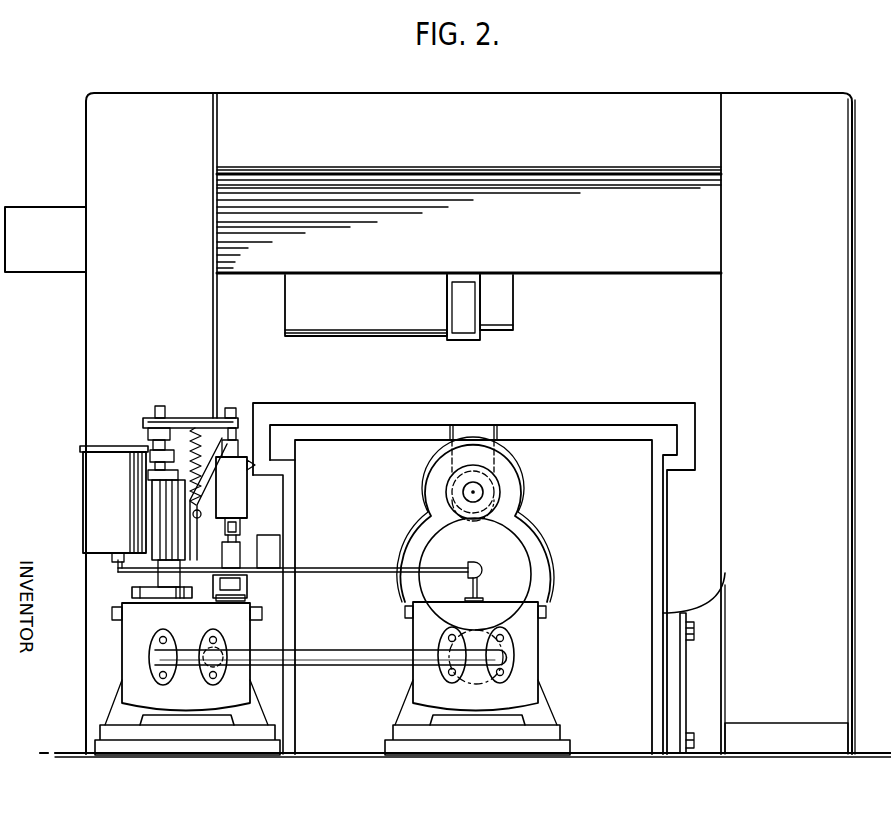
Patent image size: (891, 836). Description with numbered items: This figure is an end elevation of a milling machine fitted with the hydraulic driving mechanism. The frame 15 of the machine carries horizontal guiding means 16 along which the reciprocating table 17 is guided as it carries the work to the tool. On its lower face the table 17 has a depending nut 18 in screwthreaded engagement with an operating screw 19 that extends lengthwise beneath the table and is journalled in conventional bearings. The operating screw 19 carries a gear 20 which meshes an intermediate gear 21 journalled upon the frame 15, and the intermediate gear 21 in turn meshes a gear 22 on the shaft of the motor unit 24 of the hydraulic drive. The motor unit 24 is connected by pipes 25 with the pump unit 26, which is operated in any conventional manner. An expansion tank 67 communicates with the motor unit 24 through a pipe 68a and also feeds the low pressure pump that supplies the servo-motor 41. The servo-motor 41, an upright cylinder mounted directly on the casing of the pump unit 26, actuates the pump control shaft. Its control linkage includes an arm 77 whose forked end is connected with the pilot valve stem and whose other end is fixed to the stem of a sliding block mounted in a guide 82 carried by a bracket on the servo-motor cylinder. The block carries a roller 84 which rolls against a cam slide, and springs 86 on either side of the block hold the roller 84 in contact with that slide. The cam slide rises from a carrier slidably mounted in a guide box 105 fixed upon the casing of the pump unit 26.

The frame 15 is at (103, 327).
The horizontal guiding means 16 is at (612, 425).
The reciprocating table 17 is at (535, 407).
The depending nut 18 is at (495, 486).
The operating screw 19 is at (462, 491).
The gear 20 is at (500, 504).
The intermediate gear 21 is at (528, 560).
The gear 22 is at (470, 676).
The motor unit 24 is at (530, 640).
The pipes 25 is at (352, 655).
The pump unit 26 is at (187, 679).
The servo-motor 41 is at (155, 530).
The expansion tank 67 is at (93, 493).
The pipe 68a is at (354, 568).
The arm 77 is at (217, 414).
The guide 82 is at (237, 492).
The roller 84 is at (245, 531).
The springs 86 is at (192, 432).
The guide box 105 is at (247, 587).